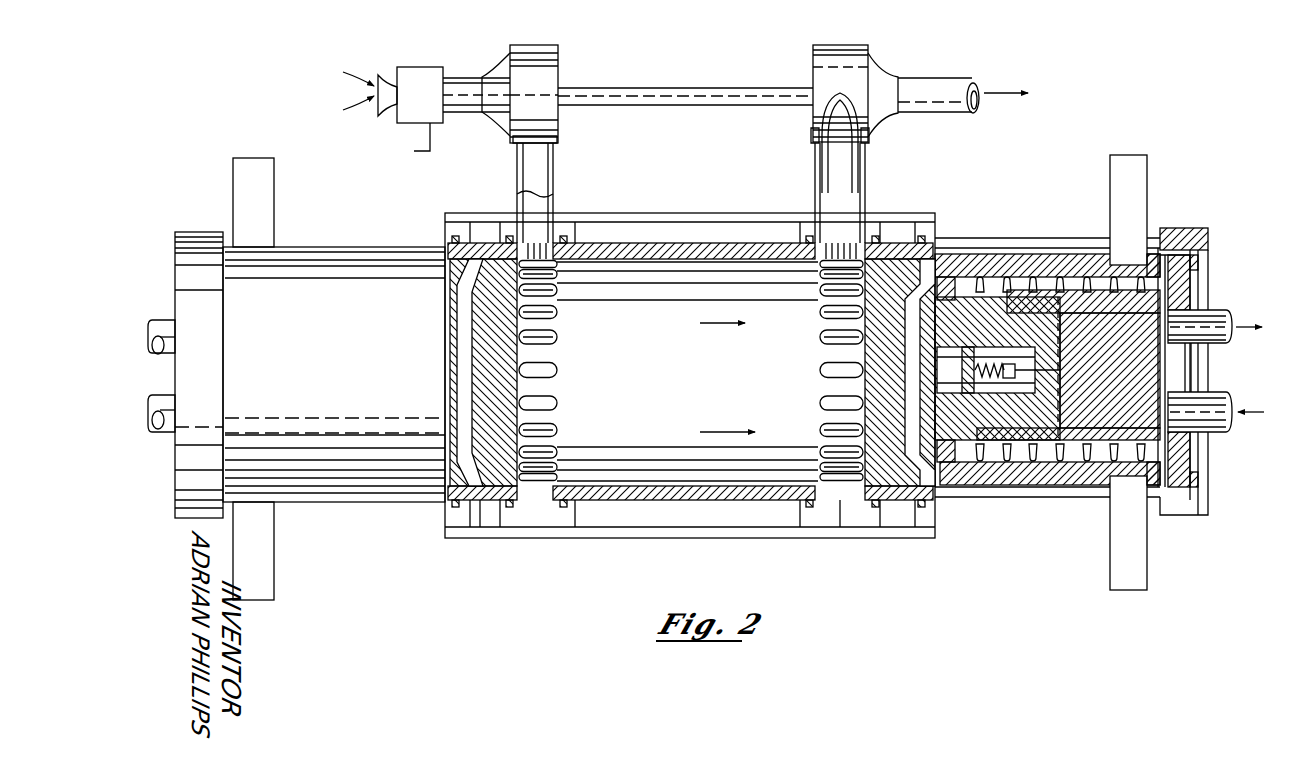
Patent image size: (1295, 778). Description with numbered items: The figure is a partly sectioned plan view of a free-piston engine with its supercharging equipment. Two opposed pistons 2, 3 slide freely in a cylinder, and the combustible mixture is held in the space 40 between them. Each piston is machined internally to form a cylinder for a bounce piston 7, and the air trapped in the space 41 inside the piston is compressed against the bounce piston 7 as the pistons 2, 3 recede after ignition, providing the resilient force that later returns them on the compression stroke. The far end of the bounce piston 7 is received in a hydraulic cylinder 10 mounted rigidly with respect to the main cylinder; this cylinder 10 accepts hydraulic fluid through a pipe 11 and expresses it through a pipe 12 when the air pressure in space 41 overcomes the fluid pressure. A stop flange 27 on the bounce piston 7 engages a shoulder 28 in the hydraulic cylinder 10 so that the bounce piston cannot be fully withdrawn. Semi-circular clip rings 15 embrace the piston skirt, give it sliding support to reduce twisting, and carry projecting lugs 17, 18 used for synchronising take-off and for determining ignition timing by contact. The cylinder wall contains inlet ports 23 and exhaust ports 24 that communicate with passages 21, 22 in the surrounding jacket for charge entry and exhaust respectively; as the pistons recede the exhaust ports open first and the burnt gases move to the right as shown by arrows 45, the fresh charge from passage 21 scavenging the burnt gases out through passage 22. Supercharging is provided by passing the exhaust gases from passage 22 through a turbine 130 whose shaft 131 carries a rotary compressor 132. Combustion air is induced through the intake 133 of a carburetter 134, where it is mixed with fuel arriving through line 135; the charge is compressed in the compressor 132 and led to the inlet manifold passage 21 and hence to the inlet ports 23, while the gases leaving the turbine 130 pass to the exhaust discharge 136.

The piston 2 is at (866, 383).
The piston 3 is at (460, 406).
The bounce piston 7 is at (958, 290).
The hydraulic cylinder 10 is at (1030, 295).
The pipe 11 is at (160, 436).
The pipe 12 is at (155, 320).
The semi-circular clip rings 15 is at (1128, 262).
The projecting lug 17 is at (1137, 587).
The projecting lug 18 is at (1147, 162).
The passage 21 is at (552, 234).
The passage 22 is at (818, 228).
The inlet ports 23 is at (557, 372).
The exhaust ports 24 is at (822, 338).
The stop flange 27 is at (1170, 312).
The shoulder 28 is at (1098, 282).
The space 40 is at (684, 381).
The space 41 is at (462, 350).
The arrows 45 is at (708, 378).
The turbine 130 is at (818, 70).
The shaft 131 is at (600, 90).
The rotary compressor 132 is at (494, 118).
The intake 133 is at (382, 110).
The carburetter 134 is at (424, 121).
The line 135 is at (416, 151).
The exhaust discharge 136 is at (963, 110).